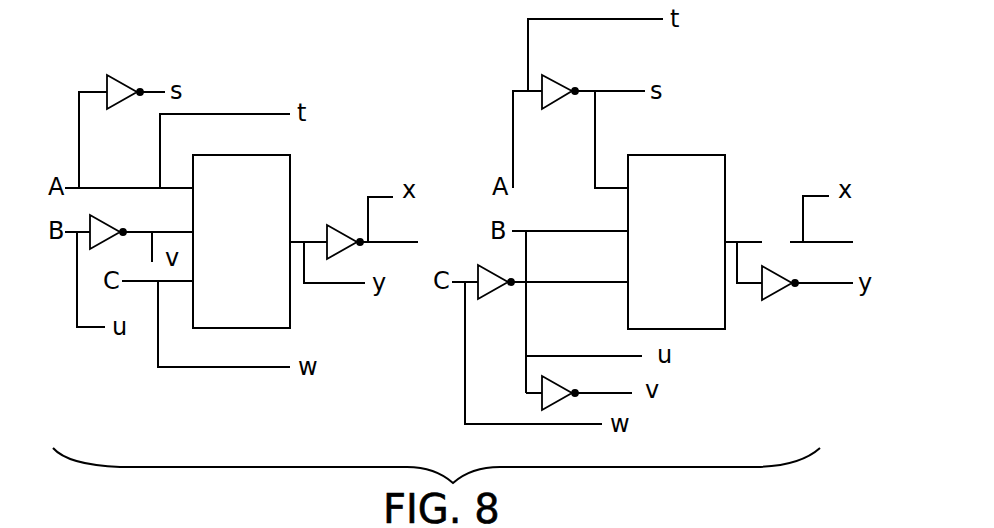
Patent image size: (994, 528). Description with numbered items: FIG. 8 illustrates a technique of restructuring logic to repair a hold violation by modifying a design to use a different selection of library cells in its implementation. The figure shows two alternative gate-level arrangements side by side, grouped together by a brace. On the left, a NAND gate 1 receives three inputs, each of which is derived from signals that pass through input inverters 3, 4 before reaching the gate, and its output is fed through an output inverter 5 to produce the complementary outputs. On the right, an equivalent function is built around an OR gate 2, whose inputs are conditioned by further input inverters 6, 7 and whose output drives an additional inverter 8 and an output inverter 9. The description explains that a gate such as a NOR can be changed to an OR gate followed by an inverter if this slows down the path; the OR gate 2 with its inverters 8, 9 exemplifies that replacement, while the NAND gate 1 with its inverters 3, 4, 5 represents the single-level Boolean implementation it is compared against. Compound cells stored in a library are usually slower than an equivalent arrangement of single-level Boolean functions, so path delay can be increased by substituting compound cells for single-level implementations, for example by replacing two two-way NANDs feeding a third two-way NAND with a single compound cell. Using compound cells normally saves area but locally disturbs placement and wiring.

The NAND gate 1 is at (241, 241).
The OR gate 2 is at (676, 242).
The inverter (A input, left circuit) 3 is at (125, 92).
The inverter (B input, left circuit) 4 is at (108, 232).
The output inverter (left circuit) 5 is at (345, 242).
The inverter (A input, right circuit) 6 is at (560, 92).
The inverter (C input, right circuit) 7 is at (496, 282).
The inverter (v output, right circuit) 8 is at (560, 393).
The output inverter (right circuit) 9 is at (780, 283).